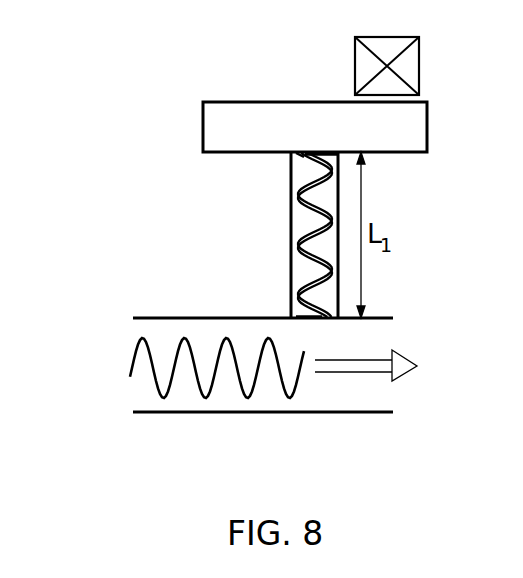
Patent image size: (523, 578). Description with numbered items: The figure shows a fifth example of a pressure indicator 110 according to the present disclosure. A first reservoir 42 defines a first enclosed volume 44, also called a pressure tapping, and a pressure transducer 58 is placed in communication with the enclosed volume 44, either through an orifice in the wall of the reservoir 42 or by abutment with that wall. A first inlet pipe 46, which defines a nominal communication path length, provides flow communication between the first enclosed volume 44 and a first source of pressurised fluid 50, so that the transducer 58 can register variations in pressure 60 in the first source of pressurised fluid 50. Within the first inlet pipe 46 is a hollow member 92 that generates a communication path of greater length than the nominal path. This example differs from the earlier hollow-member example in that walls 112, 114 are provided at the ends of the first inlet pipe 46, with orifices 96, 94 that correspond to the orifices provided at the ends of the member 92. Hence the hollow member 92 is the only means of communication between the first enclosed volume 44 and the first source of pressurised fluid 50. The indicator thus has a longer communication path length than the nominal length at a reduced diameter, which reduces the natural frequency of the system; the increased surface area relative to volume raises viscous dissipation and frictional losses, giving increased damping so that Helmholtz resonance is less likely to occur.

The pressure indicator 110 is at (92, 182).
The first reservoir 42 is at (201, 101).
The first enclosed volume 44 is at (261, 113).
The pressure transducer 58 is at (408, 62).
The wall 112 is at (338, 137).
The second orifice 96 is at (300, 152).
The first inlet pipe 46 is at (291, 177).
The hollow member 92 is at (300, 260).
The first orifice 94 is at (327, 318).
The wall 114 is at (307, 318).
The first source of pressurised fluid 50 is at (272, 398).
The variations in pressure 60 is at (153, 373).